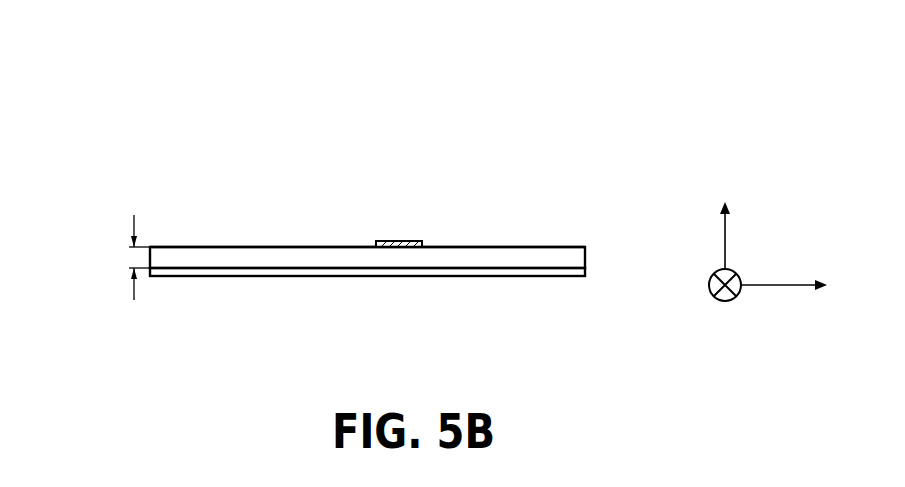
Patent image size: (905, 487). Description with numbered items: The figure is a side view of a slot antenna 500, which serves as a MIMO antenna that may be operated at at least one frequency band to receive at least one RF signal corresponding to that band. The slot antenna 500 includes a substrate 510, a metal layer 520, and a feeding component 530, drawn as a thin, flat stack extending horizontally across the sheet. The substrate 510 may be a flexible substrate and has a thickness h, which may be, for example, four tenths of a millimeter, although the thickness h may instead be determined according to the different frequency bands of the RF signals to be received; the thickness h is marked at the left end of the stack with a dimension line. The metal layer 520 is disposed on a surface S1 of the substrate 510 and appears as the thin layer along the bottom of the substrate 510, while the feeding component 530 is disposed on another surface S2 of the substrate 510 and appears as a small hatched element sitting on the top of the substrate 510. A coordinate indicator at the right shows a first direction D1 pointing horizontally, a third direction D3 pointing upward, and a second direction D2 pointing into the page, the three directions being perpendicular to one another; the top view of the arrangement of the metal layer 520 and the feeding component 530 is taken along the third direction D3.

The slot antenna 500 is at (670, 403).
The substrate 510 is at (585, 258).
The metal layer 520 is at (585, 272).
The feeding component 530 is at (393, 240).
The surface S1 is at (468, 282).
The another surface S2 is at (468, 240).
The thickness h is at (130, 257).
The first direction D1 is at (799, 286).
The second direction D2 is at (725, 305).
The third direction D3 is at (724, 219).